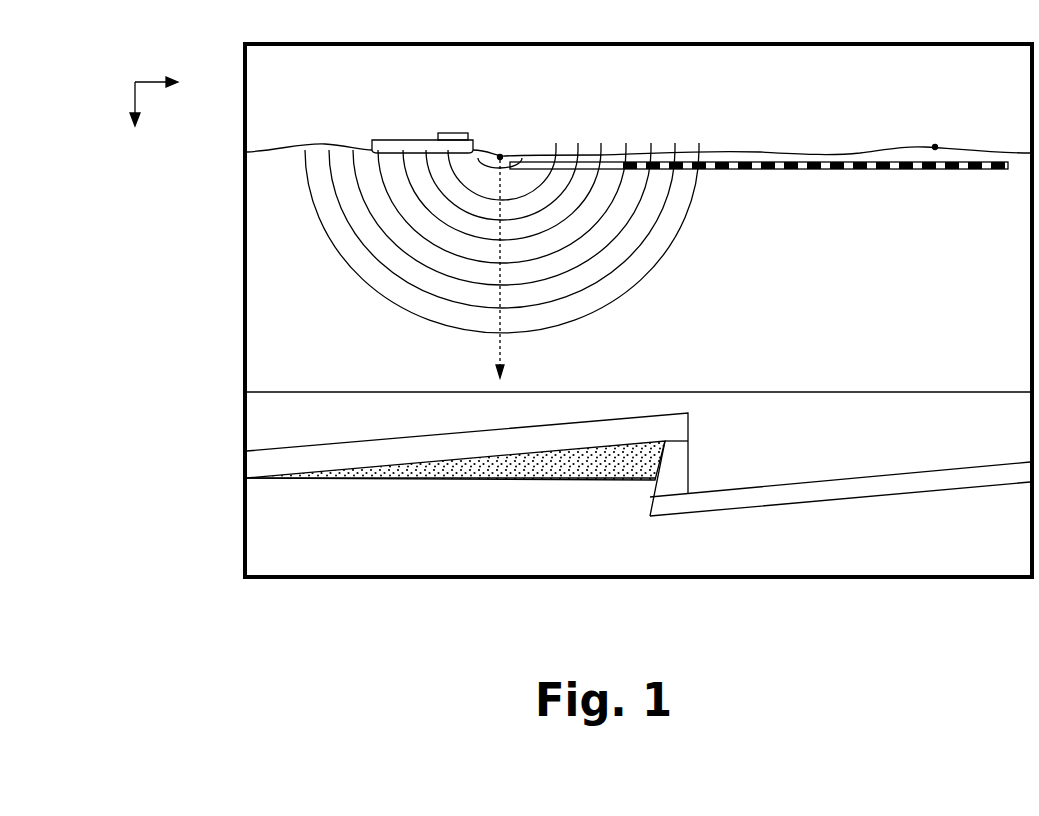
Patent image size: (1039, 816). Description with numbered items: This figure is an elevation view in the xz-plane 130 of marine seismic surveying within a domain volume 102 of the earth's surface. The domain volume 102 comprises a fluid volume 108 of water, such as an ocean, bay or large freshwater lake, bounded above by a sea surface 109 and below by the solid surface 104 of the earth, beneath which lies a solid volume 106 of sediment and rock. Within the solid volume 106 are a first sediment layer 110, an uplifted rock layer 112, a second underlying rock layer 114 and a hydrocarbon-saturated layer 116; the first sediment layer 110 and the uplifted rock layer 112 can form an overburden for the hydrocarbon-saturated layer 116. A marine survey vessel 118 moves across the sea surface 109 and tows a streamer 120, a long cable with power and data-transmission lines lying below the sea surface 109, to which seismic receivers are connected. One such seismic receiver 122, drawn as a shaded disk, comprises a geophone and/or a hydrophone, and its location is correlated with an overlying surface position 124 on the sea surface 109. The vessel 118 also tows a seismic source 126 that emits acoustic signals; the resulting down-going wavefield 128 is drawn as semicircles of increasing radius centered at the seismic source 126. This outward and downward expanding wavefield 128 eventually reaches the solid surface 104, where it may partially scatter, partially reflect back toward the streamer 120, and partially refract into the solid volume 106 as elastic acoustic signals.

The domain volume 102 is at (148, 212).
The solid surface 104 is at (300, 388).
The solid volume 106 is at (265, 410).
The fluid volume 108 is at (265, 296).
The sea surface 109 is at (775, 152).
The first sediment layer 110 is at (896, 451).
The uplifted rock layer 112 is at (265, 470).
The second underlying rock layer 114 is at (367, 563).
The hydrocarbon-saturated layer 116 is at (465, 481).
The marine survey vessel 118 is at (411, 140).
The streamer 120 is at (826, 200).
The seismic receiver 122 is at (930, 170).
The surface position 124 is at (937, 146).
The seismic source 126 is at (500, 155).
The down-going wavefield 128 is at (663, 254).
The xz-plane 130 is at (135, 82).